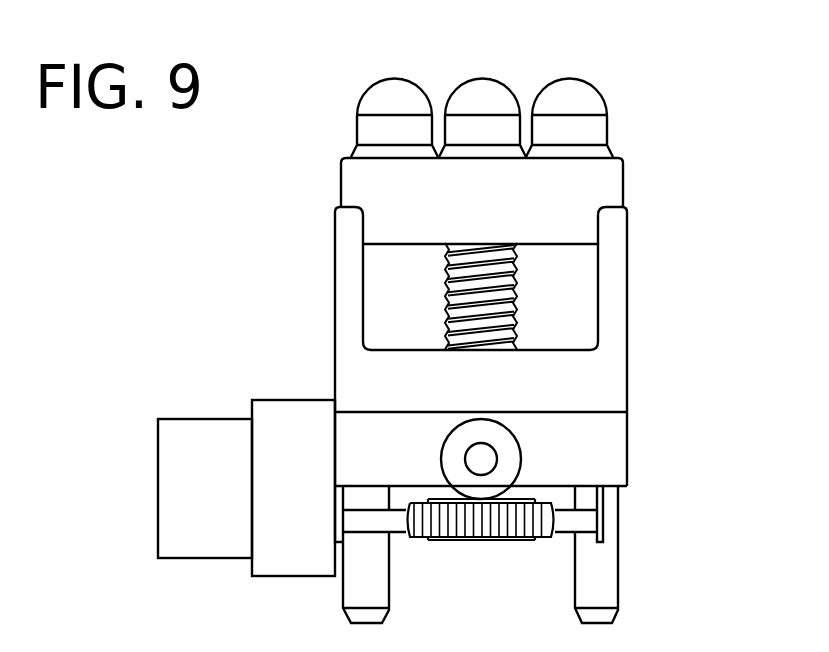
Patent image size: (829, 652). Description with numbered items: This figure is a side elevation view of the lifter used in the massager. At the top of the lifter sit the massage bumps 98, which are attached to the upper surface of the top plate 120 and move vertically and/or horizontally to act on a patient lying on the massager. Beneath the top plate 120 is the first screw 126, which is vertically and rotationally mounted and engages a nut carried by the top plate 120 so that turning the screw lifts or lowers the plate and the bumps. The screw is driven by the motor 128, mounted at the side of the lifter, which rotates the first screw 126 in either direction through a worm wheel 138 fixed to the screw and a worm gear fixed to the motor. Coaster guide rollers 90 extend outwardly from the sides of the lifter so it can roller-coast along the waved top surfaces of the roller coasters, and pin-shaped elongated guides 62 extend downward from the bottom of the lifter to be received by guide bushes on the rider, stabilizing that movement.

The massage bumps 98 is at (563, 88).
The top plate 120 is at (613, 180).
The first screw 126 is at (520, 300).
The motor 128 is at (205, 428).
The coaster guide rollers 90 is at (521, 459).
The elongated guides 62 is at (608, 560).
The worm wheel 138 is at (433, 525).